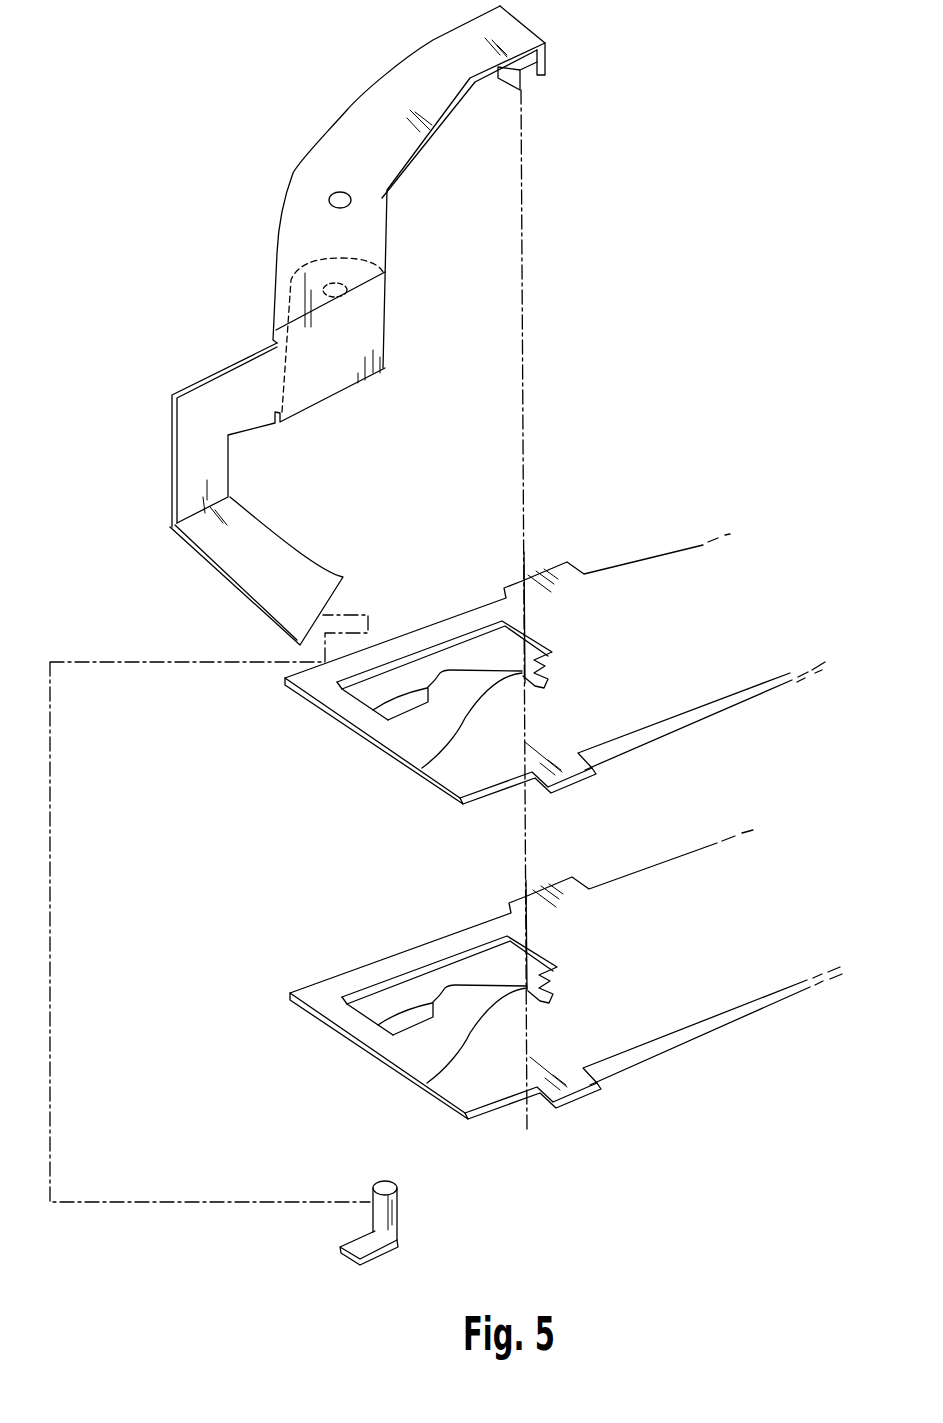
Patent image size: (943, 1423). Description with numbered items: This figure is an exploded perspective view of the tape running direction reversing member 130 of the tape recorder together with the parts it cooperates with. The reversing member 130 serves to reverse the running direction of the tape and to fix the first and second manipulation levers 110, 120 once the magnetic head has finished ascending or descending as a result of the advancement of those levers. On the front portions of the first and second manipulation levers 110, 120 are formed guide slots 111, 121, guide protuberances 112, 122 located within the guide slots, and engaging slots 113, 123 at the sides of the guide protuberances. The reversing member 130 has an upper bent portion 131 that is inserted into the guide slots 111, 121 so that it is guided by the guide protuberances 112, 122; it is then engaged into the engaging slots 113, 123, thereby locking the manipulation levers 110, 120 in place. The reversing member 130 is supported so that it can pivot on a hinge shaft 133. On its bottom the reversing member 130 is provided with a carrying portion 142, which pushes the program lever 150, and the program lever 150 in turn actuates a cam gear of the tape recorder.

The first manipulation lever 110 is at (665, 582).
The guide slot 111 is at (463, 657).
The guide protuberance 112 is at (352, 727).
The engaging slot 113 is at (423, 773).
The second manipulation lever 120 is at (660, 883).
The guide slot 121 is at (447, 972).
The guide protuberance 122 is at (378, 1025).
The engaging slot 123 is at (427, 1085).
The tape running direction reversing member 130 is at (292, 243).
The upper bent portion 131 is at (547, 53).
The hinge shaft 133 is at (330, 197).
The carrying portion 142 is at (238, 560).
The program lever 150 is at (343, 1228).